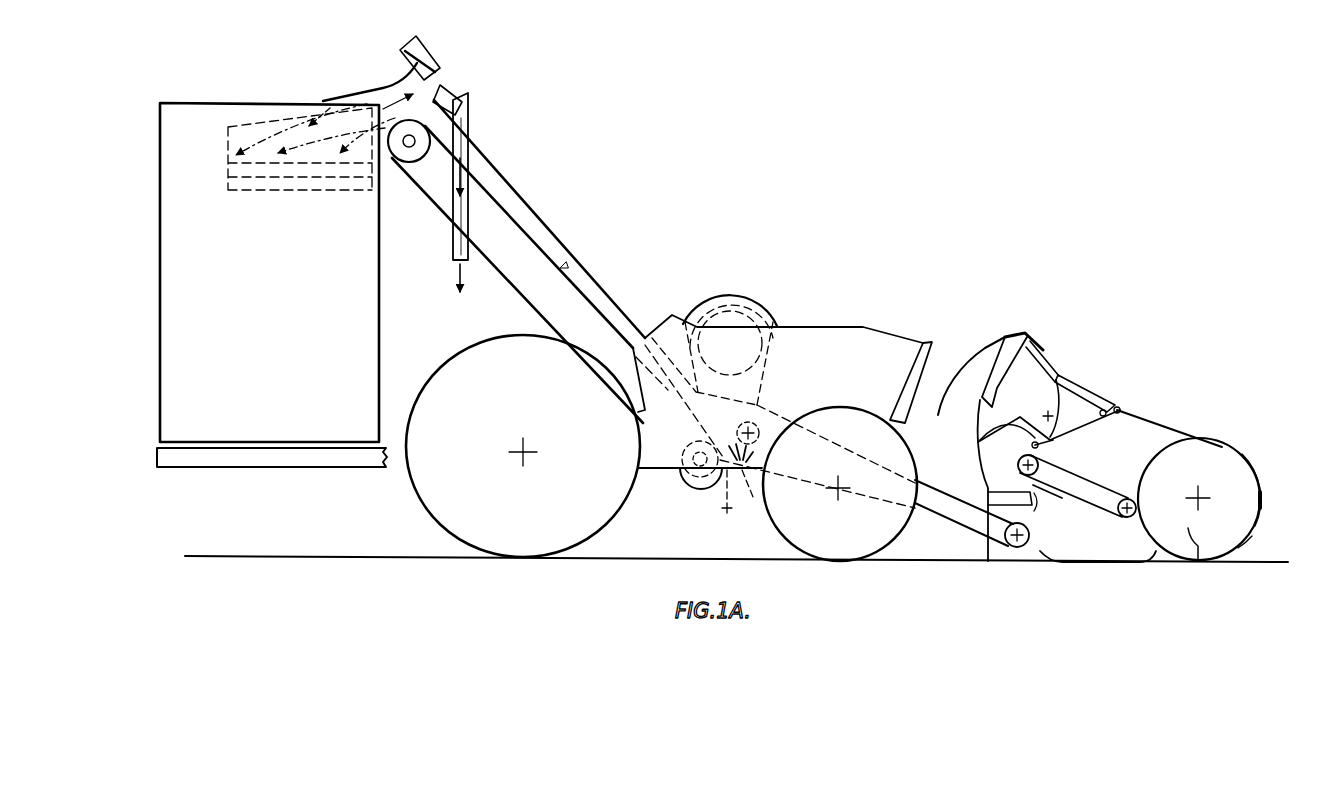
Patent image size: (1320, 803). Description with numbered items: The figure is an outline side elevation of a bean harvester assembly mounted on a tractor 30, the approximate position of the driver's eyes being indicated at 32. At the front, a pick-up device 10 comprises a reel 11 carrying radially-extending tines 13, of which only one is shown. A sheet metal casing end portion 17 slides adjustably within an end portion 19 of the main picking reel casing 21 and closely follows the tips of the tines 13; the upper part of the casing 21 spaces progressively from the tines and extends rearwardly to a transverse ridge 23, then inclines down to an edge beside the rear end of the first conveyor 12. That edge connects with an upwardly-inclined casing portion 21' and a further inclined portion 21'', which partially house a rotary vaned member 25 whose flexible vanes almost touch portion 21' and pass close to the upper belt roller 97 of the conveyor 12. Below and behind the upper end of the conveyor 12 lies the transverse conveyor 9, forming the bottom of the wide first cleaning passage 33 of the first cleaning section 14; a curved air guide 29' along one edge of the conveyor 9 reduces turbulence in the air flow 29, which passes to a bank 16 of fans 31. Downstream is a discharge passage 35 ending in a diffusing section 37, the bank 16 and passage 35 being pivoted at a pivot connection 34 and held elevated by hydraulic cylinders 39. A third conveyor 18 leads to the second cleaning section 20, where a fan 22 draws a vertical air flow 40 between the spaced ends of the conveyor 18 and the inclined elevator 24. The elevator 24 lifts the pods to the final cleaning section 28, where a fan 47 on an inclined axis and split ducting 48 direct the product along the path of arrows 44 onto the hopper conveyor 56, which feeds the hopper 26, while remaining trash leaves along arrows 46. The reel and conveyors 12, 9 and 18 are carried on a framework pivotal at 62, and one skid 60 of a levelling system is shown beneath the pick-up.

The second transverse conveyor 9 is at (978, 488).
The forward pick-up device 10 is at (1250, 536).
The reel 11 is at (1217, 451).
The first conveyor 12 is at (1116, 519).
The tines 13 is at (1181, 539).
The first crop-separating or cleaning section 14 is at (1054, 433).
The bank of blowers or fans 16 is at (1052, 358).
The casing end portion 17 is at (1258, 529).
The third conveyor 18 is at (963, 524).
The end portion of main picking reel casing 19 is at (1260, 481).
The second crop-separating or cleaning section 20 is at (716, 489).
The main picking reel casing 21 is at (1169, 418).
The upwardly-inclined casing portion 21' is at (1066, 448).
The further upwardly-inclined casing portion 21'' is at (1029, 406).
The fan or blower 22 is at (773, 364).
The transverse ridge 23 is at (1116, 406).
The fourth conveyor or elevator 24 is at (610, 294).
The rotary flap valve or rotary vaned member 25 is at (978, 425).
The hopper 26 is at (268, 300).
The third and final cleaning section 28 is at (472, 86).
The air flow 29 is at (1136, 498).
The curved air guide 29' is at (1059, 497).
The tractor 30 is at (806, 323).
The fans 31 is at (992, 390).
The eye position of driver 32 is at (568, 265).
The first air separating or cleaning passage 33 is at (1065, 470).
The pivot connection 34 is at (1027, 334).
The discharge passage 35 is at (988, 337).
The diffusing section 37 is at (925, 385).
The hydraulic cylinders 39 is at (1092, 389).
The vertical air flow arrows 40 is at (748, 491).
The product flow arrows 44 is at (395, 102).
The waste discharge arrows 46 is at (458, 265).
The fan 47 is at (428, 62).
The split ducting 48 is at (383, 87).
The transverse hopper conveyor 56 is at (355, 170).
The skid or ski 60 is at (1094, 556).
The pivot 62 is at (727, 513).
The upper belt roller 97 is at (980, 453).